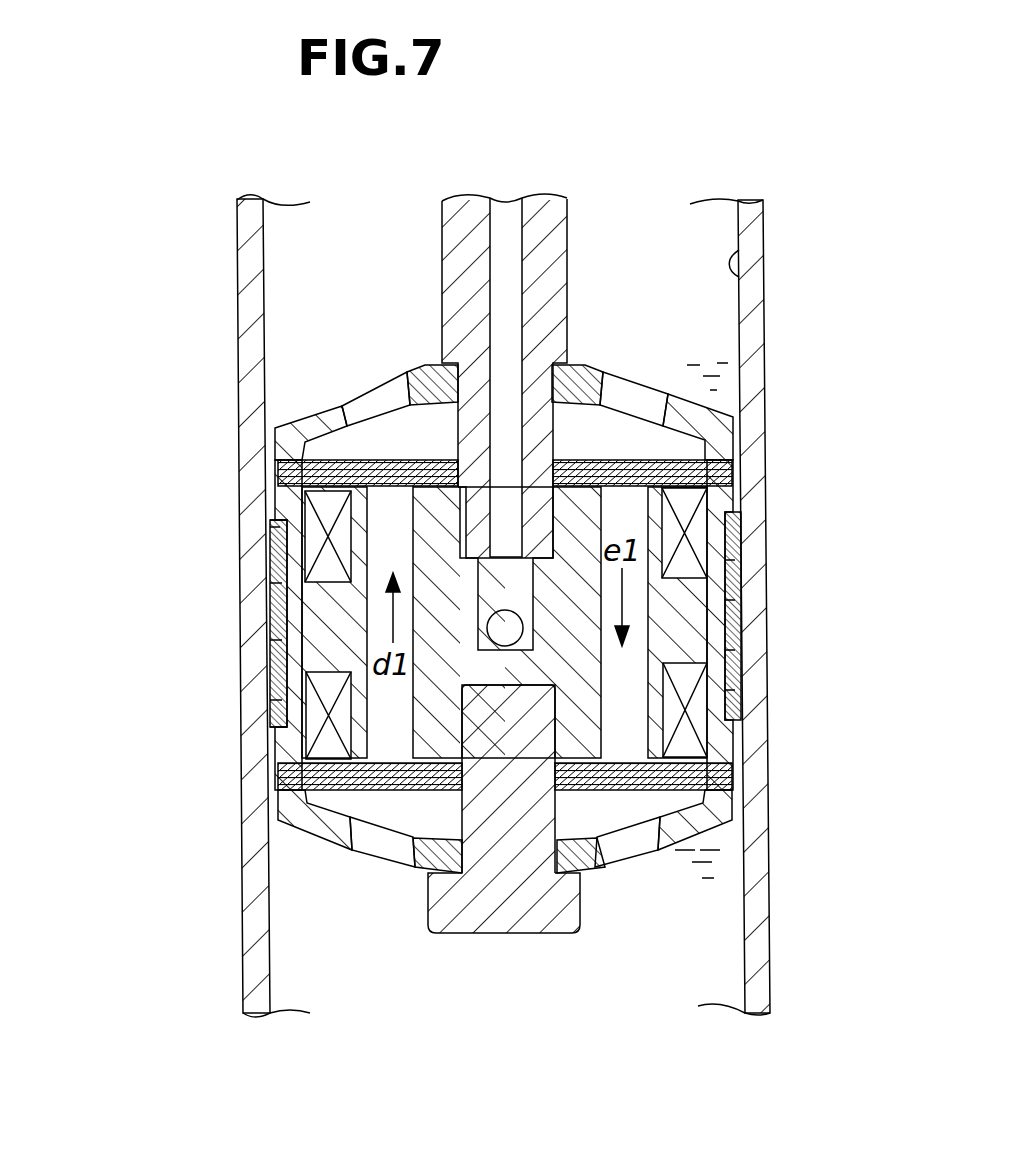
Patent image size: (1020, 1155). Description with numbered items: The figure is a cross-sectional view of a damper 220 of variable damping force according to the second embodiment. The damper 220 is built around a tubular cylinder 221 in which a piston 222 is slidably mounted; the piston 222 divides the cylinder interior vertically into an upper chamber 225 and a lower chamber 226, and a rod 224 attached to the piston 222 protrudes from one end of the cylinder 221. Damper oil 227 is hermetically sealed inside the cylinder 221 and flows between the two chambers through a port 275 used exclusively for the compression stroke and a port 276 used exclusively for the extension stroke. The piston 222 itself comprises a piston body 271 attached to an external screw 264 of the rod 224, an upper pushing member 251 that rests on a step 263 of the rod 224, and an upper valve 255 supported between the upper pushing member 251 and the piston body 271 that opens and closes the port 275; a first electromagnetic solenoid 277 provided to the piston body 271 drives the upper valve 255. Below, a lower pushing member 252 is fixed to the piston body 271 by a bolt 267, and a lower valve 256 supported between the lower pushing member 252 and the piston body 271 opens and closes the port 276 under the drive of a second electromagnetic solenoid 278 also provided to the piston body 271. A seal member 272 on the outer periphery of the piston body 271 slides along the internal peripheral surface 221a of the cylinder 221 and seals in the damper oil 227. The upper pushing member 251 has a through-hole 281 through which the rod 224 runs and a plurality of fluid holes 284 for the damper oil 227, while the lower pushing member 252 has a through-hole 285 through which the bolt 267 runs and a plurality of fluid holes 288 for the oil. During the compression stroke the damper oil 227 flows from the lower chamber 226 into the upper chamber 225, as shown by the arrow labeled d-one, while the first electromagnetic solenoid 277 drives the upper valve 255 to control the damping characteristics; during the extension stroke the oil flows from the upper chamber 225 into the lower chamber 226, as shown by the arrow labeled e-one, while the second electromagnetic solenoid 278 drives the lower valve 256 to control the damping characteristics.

The damper of variable damping force 220 is at (183, 117).
The cylinder 221 is at (772, 212).
The internal peripheral surface 221a is at (740, 251).
The piston 222 is at (296, 380).
The rod 224 is at (558, 179).
The upper chamber 225 is at (300, 285).
The lower chamber 226 is at (290, 897).
The damper oil 227 is at (718, 365).
The upper pushing member 251 is at (295, 417).
The lower pushing member 252 is at (310, 841).
The upper valve 255 is at (682, 452).
The lower valve 256 is at (703, 820).
The step 263 is at (600, 370).
The external screw 264 is at (437, 462).
The bolt 267 is at (521, 935).
The piston body 271 is at (290, 746).
The seal member 272 is at (378, 623).
The port 275 is at (276, 585).
The port 276 is at (638, 623).
The first electromagnetic solenoid 277 is at (296, 513).
The second electromagnetic solenoid 278 is at (710, 707).
The through-hole 281 is at (540, 362).
The fluid holes 284 is at (396, 383).
The through-hole 285 is at (462, 935).
The fluid holes 288 is at (408, 852).